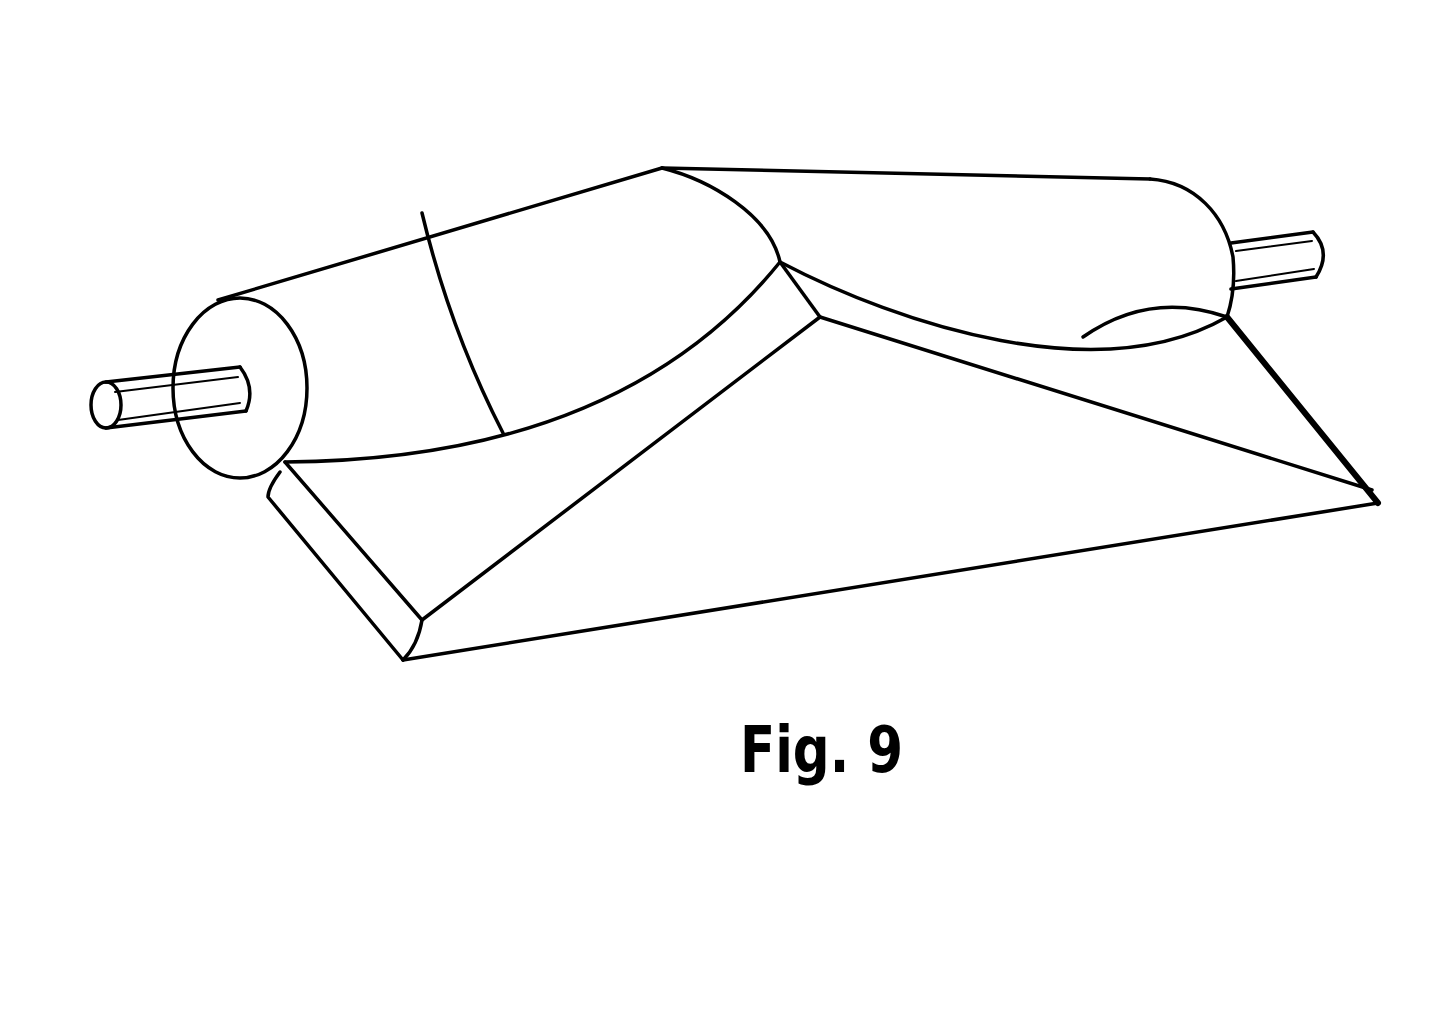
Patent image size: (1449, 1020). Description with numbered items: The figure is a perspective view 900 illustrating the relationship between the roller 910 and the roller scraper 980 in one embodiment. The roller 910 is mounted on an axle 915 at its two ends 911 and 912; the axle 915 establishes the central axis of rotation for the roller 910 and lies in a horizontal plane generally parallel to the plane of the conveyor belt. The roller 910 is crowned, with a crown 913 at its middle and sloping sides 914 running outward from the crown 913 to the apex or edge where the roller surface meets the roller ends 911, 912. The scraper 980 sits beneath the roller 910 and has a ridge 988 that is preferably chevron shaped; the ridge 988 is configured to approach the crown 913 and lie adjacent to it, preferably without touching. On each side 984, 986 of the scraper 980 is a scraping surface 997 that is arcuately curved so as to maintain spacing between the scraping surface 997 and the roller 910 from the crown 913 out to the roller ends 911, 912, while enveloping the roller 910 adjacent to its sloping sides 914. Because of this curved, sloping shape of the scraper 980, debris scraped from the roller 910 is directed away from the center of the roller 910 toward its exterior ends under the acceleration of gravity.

The perspective view 900 is at (337, 145).
The roller 910 is at (913, 220).
The roller end 911 is at (215, 327).
The roller end 912 is at (1210, 208).
The crown 913 is at (662, 168).
The sloping sides 914 is at (537, 200).
The axle 915 is at (145, 393).
The roller scraper 980 is at (802, 563).
The side of the scraper 984 is at (400, 528).
The side of the scraper 986 is at (1230, 407).
The ridge 988 is at (808, 288).
The scraping surface 997 is at (1268, 317).